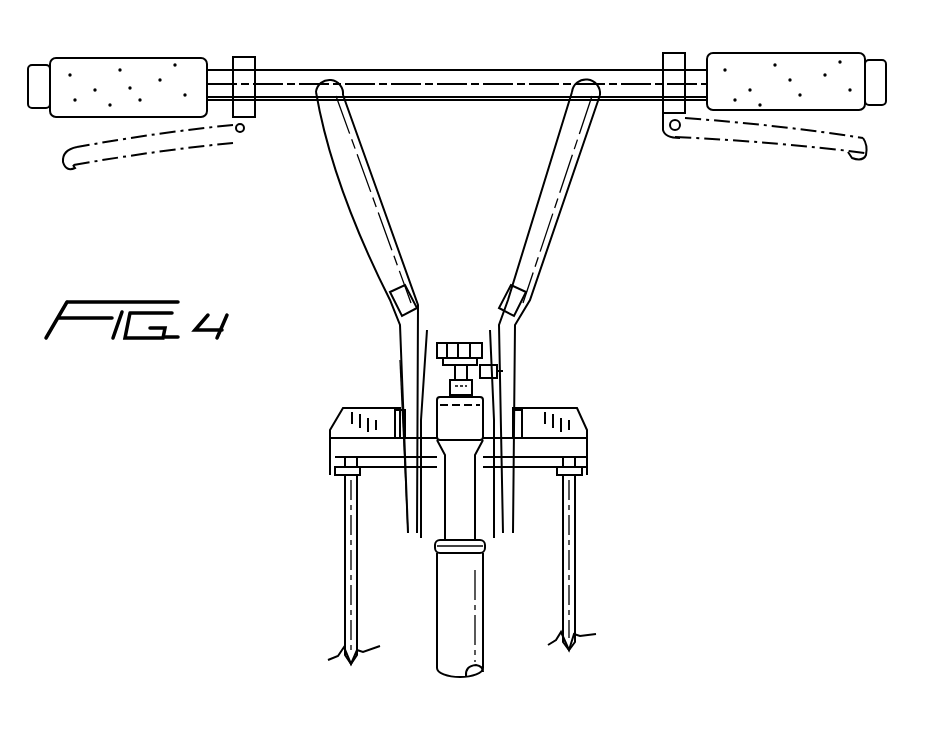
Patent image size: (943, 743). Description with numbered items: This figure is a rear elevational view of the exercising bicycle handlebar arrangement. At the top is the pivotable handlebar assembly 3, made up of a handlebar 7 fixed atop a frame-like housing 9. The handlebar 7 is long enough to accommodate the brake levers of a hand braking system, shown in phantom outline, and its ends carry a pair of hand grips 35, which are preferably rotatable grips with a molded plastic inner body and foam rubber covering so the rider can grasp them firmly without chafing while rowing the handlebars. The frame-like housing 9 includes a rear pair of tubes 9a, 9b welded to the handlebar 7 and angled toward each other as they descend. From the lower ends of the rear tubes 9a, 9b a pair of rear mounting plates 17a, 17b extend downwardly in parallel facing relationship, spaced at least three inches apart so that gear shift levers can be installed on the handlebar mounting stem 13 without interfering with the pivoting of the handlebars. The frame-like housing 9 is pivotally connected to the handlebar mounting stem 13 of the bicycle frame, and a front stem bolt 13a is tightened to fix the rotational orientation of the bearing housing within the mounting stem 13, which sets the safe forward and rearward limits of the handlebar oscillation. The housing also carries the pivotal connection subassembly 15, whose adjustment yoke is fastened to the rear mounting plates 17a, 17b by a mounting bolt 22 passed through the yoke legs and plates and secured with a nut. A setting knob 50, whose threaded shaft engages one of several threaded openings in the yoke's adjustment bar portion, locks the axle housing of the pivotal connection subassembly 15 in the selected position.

The handlebar assembly 3 is at (457, 84).
The handlebar 7 is at (290, 68).
The hand grips 35 is at (160, 50).
The frame-like housing 9 is at (470, 306).
The rear tube 9a is at (365, 221).
The rear tube 9b is at (565, 220).
The setting knob 50 is at (467, 342).
The front stem bolt 13a is at (450, 385).
The mounting bolt 22 is at (393, 407).
The pivotal connection subassembly 15 is at (472, 417).
The handlebar mounting stem 13 is at (465, 491).
The rear mounting plate 17a is at (403, 507).
The rear mounting plate 17b is at (508, 513).